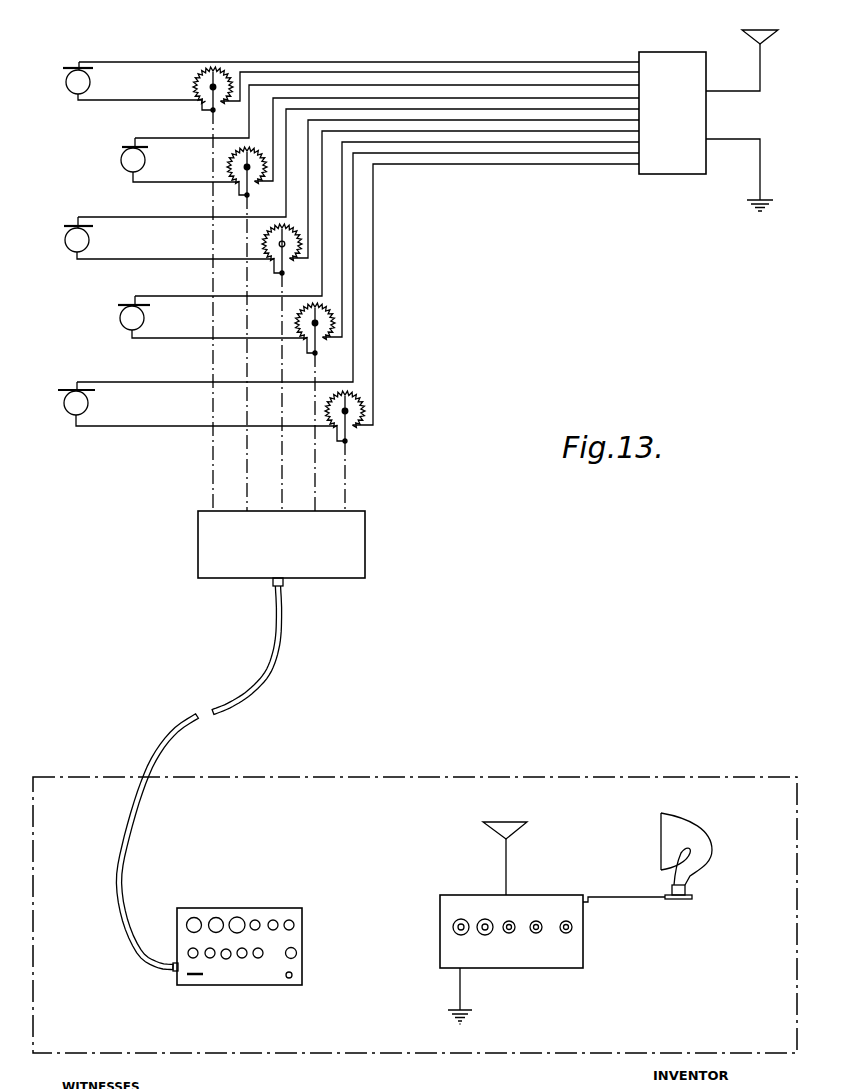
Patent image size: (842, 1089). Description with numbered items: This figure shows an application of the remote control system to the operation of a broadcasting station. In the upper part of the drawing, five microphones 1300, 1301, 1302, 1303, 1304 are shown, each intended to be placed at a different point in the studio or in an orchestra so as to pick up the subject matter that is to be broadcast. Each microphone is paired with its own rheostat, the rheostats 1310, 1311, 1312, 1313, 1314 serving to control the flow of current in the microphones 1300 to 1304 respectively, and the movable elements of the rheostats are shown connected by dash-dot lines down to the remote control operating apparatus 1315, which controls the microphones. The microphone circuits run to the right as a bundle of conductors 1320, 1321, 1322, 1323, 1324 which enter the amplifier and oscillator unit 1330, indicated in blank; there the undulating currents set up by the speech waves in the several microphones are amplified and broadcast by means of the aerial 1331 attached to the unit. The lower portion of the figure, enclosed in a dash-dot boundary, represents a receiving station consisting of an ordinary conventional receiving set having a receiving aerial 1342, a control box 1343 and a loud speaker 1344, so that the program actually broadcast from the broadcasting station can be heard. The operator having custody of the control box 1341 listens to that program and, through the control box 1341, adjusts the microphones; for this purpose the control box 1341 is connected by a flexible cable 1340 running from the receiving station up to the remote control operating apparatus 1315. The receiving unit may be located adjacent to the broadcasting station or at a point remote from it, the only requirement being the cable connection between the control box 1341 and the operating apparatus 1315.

The microphone 1300 is at (90, 82).
The microphone 1301 is at (145, 161).
The microphone 1302 is at (89, 240).
The microphone 1303 is at (144, 319).
The microphone 1304 is at (88, 403).
The rheostat 1310 is at (228, 75).
The rheostat 1311 is at (235, 172).
The rheostat 1312 is at (267, 243).
The rheostat 1313 is at (318, 318).
The rheostat 1314 is at (350, 420).
The remote control operating apparatus 1315 is at (281, 544).
The conductor 1320 is at (359, 50).
The conductor 1321 is at (469, 85).
The conductor 1322 is at (535, 109).
The conductor 1323 is at (473, 132).
The conductor 1324 is at (568, 154).
The amplifier and oscillator unit 1330 is at (672, 113).
The aerial 1331 is at (742, 32).
The cable 1340 is at (268, 662).
The control box 1341 is at (237, 946).
The aerial 1342 is at (517, 812).
The control box 1343 is at (552, 959).
The loud speaker 1344 is at (675, 837).